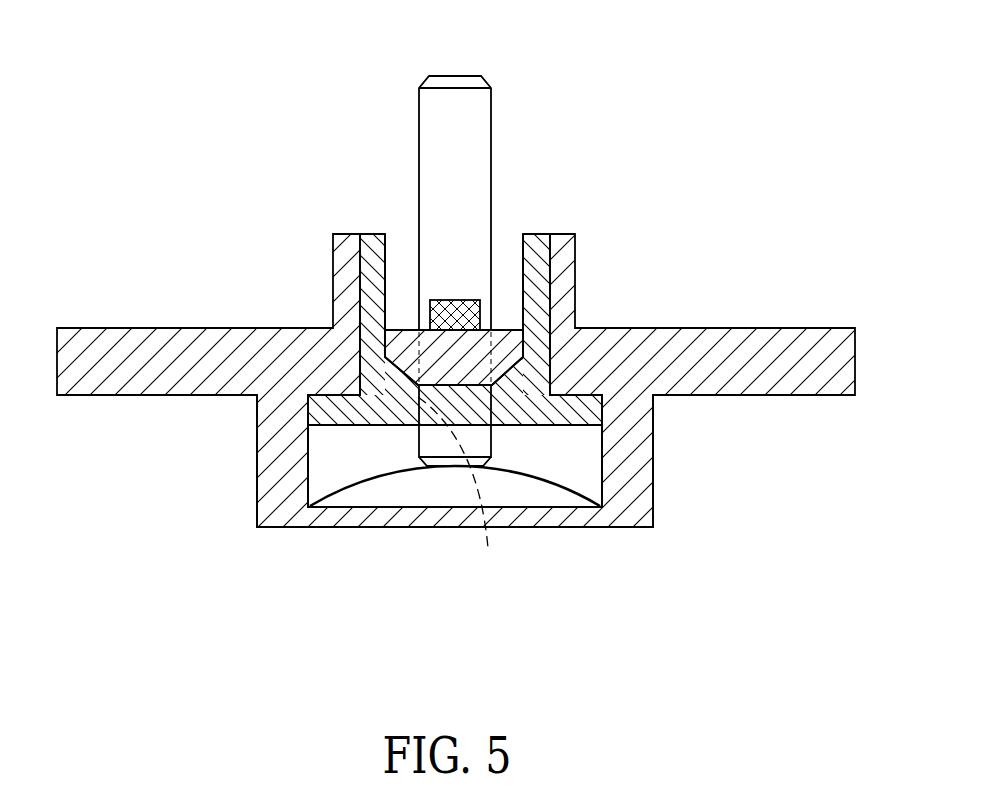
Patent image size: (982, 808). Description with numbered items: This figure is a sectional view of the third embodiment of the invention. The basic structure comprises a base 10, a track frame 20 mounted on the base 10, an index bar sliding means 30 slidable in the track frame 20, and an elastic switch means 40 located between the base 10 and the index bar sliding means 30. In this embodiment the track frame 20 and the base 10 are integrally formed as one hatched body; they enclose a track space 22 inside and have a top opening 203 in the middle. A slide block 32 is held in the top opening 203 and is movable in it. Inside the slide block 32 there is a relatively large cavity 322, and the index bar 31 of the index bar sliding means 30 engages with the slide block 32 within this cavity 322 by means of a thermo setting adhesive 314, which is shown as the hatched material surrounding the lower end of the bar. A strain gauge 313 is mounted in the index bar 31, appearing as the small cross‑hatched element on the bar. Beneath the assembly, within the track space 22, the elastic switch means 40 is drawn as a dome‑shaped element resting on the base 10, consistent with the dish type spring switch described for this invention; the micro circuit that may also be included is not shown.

The base 10 is at (647, 510).
The track frame 20 is at (565, 308).
The track space 22 is at (570, 453).
The top opening 203 is at (468, 496).
The index bar sliding means 30 is at (447, 248).
The index bar 31 is at (428, 117).
The strain gauge 313 is at (458, 300).
The thermo setting adhesive 314 is at (403, 340).
The slide block 32 is at (570, 232).
The cavity 322 is at (507, 253).
The elastic switch means 40 is at (380, 487).